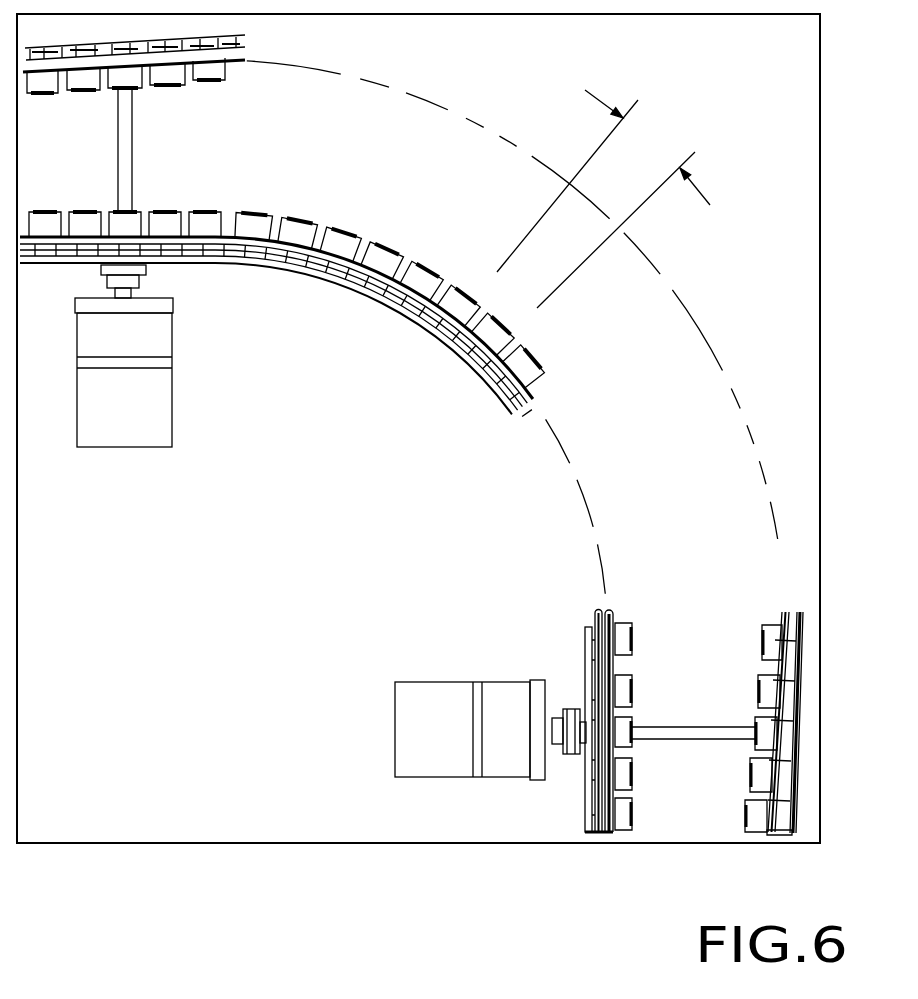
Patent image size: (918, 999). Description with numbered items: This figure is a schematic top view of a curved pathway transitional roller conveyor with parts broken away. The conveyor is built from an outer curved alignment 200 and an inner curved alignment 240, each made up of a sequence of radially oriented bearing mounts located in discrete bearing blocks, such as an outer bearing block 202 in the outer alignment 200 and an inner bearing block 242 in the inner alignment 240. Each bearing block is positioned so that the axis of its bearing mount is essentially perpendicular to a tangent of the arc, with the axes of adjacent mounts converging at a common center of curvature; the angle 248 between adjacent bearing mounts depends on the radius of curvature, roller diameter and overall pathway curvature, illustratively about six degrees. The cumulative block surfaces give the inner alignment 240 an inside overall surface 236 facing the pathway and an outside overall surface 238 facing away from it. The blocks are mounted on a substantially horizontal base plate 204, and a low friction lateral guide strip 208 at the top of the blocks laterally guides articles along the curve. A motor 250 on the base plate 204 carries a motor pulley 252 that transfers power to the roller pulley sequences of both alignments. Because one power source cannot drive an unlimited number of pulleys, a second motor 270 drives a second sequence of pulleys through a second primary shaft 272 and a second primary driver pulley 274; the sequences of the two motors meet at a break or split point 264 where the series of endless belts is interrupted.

The outer curved alignment 200 is at (727, 383).
The outer bearing block 202 is at (808, 653).
The base plate 204 is at (371, 530).
The lateral guide strip 208 is at (610, 704).
The inside overall surface 236 is at (618, 667).
The outside overall surface 238 is at (600, 663).
The inner curved alignment 240 is at (565, 446).
The inner bearing block 242 is at (585, 626).
The angle between adjacent bearing mounts 248 is at (667, 141).
The motor 250 is at (420, 733).
The motor pulley 252 is at (563, 752).
The break or split point 264 is at (310, 284).
The second motor 270 is at (122, 425).
The second primary shaft 272 is at (125, 156).
The second primary driver pulley 274 is at (148, 258).